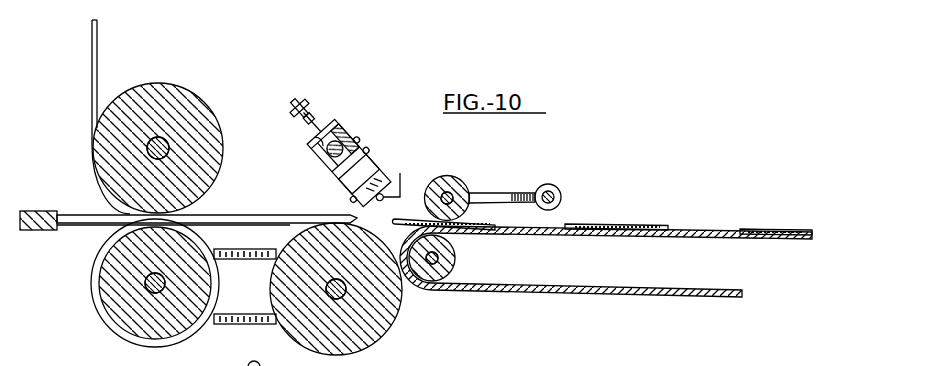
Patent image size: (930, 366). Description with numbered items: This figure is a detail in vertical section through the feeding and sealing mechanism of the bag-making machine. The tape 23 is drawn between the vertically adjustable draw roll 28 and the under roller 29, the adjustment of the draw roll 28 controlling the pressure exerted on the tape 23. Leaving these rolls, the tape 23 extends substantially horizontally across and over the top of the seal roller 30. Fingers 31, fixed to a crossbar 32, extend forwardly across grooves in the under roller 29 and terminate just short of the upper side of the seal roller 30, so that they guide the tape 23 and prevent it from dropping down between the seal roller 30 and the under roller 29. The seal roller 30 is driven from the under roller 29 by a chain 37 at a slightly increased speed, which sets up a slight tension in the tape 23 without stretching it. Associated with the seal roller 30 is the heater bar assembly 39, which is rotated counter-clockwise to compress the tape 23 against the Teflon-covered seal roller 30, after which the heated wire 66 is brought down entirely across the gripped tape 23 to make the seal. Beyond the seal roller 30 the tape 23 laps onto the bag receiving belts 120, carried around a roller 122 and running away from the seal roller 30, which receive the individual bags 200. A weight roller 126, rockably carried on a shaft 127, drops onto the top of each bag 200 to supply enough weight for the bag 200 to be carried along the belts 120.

The tape 23 is at (98, 52).
The draw roll 28 is at (175, 100).
The under roller 29 is at (122, 303).
The seal roller 30 is at (363, 335).
The fingers 31 is at (93, 226).
The crossbar 32 is at (33, 210).
The chain 37 is at (233, 324).
The heater bar assembly 39 is at (343, 117).
The wire 66 is at (400, 174).
The bag receiving belts 120 is at (685, 232).
The roller 122 is at (446, 257).
The weight roller 126 is at (456, 182).
The shaft 127 is at (561, 193).
The bag 200 is at (405, 219).